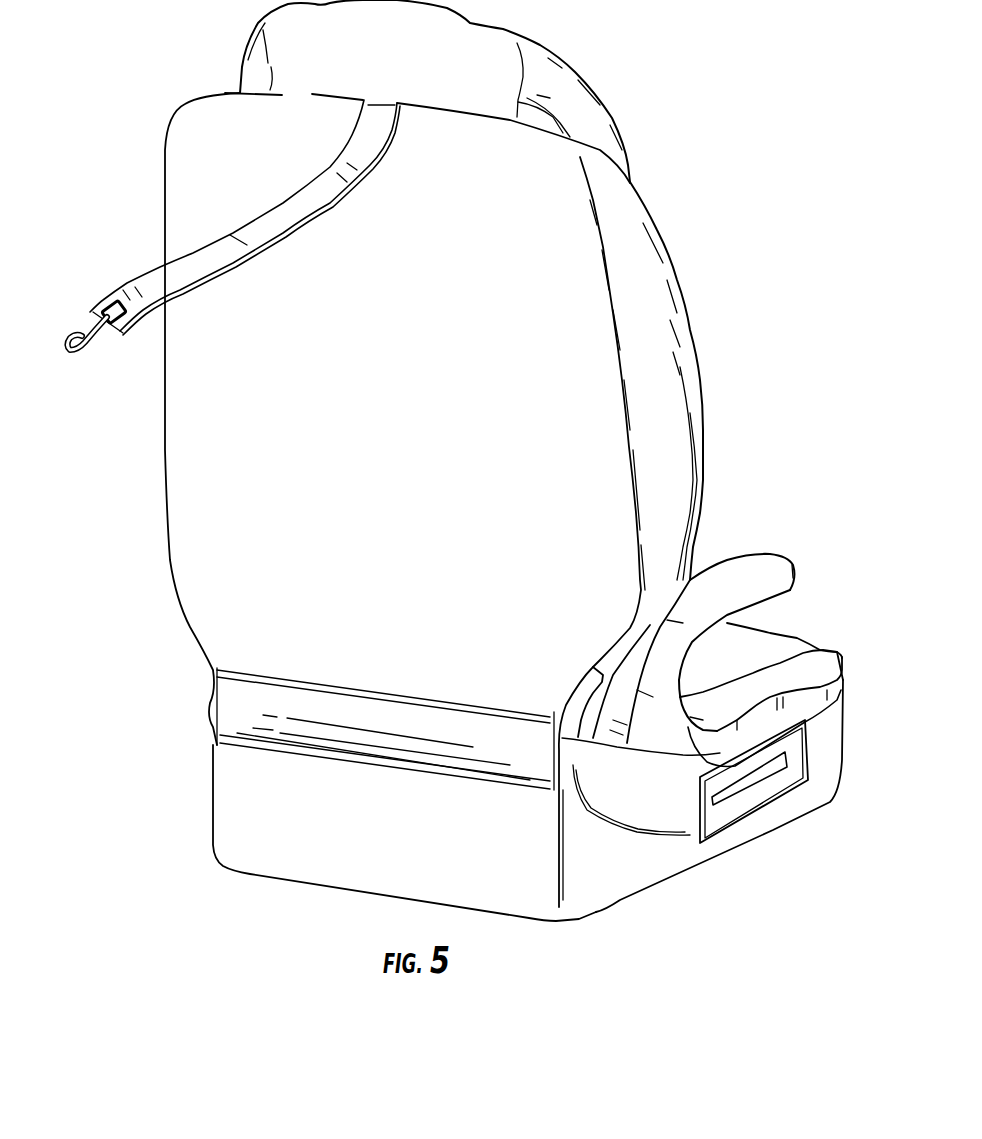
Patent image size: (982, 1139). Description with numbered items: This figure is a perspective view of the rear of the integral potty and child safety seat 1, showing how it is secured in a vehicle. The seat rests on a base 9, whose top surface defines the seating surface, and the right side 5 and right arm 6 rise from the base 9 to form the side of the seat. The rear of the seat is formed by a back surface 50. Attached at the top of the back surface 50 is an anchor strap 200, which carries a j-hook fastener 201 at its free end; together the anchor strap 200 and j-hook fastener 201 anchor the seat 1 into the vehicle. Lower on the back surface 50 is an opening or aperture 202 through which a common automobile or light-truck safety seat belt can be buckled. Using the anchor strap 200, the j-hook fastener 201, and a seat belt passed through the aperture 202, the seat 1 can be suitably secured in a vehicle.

The integral potty and child safety seat 1 is at (690, 196).
The right side 5 is at (823, 663).
The right arm 6 is at (762, 565).
The base 9 is at (830, 763).
The back surface 50 is at (243, 487).
The anchor strap 200 is at (143, 277).
The j-hook fastener 201 is at (70, 333).
The aperture 202 is at (220, 705).